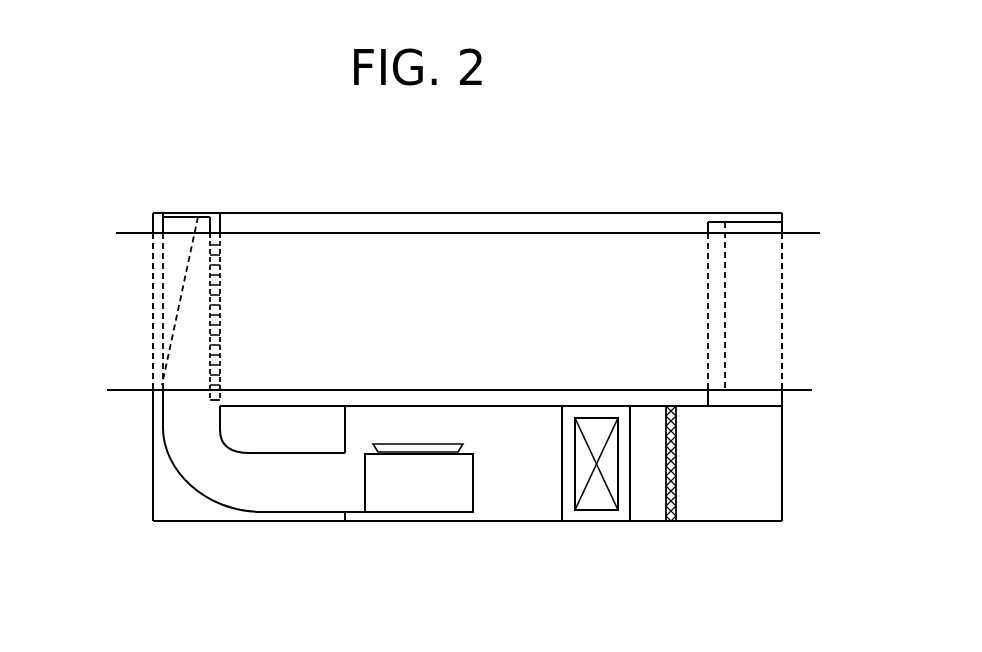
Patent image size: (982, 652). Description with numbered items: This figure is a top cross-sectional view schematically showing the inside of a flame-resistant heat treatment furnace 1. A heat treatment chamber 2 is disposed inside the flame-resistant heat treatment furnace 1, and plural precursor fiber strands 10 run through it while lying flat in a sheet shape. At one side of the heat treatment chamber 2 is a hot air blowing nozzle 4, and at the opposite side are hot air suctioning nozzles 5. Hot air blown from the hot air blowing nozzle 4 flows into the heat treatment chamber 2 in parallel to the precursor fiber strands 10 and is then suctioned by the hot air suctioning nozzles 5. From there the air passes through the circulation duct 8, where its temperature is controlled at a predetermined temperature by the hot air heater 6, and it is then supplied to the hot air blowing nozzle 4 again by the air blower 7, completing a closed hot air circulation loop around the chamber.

The flame-resistant heat treatment furnace 1 is at (474, 209).
The heat treatment chamber 2 is at (631, 247).
The hot air blowing nozzle 4 is at (226, 245).
The hot air suctioning nozzle 5 is at (706, 247).
The hot air heater 6 is at (596, 513).
The air blower 7 is at (420, 519).
The circulation duct 8 is at (507, 504).
The precursor fiber strand 10 is at (341, 246).